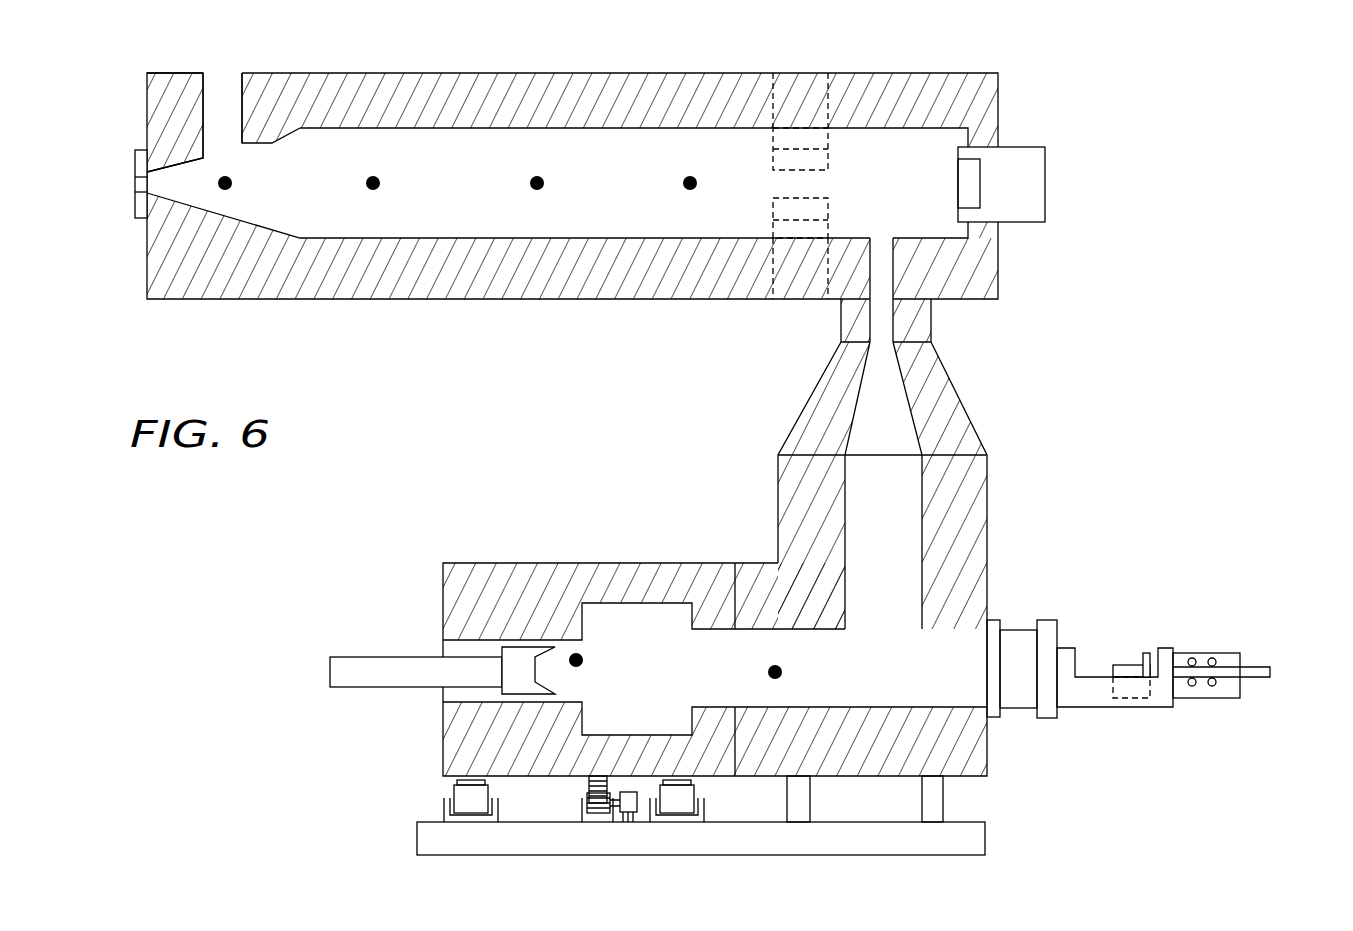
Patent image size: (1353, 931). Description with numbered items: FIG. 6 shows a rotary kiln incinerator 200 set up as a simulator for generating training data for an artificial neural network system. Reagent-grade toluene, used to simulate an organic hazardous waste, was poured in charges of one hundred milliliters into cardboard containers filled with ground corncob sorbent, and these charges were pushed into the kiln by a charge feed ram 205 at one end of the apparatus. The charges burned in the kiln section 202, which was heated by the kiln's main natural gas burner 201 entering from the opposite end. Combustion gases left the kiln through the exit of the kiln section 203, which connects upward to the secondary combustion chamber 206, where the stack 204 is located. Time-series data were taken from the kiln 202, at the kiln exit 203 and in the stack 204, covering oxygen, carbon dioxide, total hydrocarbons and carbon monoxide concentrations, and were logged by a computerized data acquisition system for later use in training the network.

The rotary kiln incinerator 200 is at (1045, 188).
The main natural gas burner 201 is at (333, 689).
The kiln section 202 is at (578, 856).
The exit of the kiln section 203 is at (863, 421).
The stack 204 is at (375, 190).
The charge feed ram 205 is at (1205, 707).
The secondary combustion chamber 206 is at (688, 73).